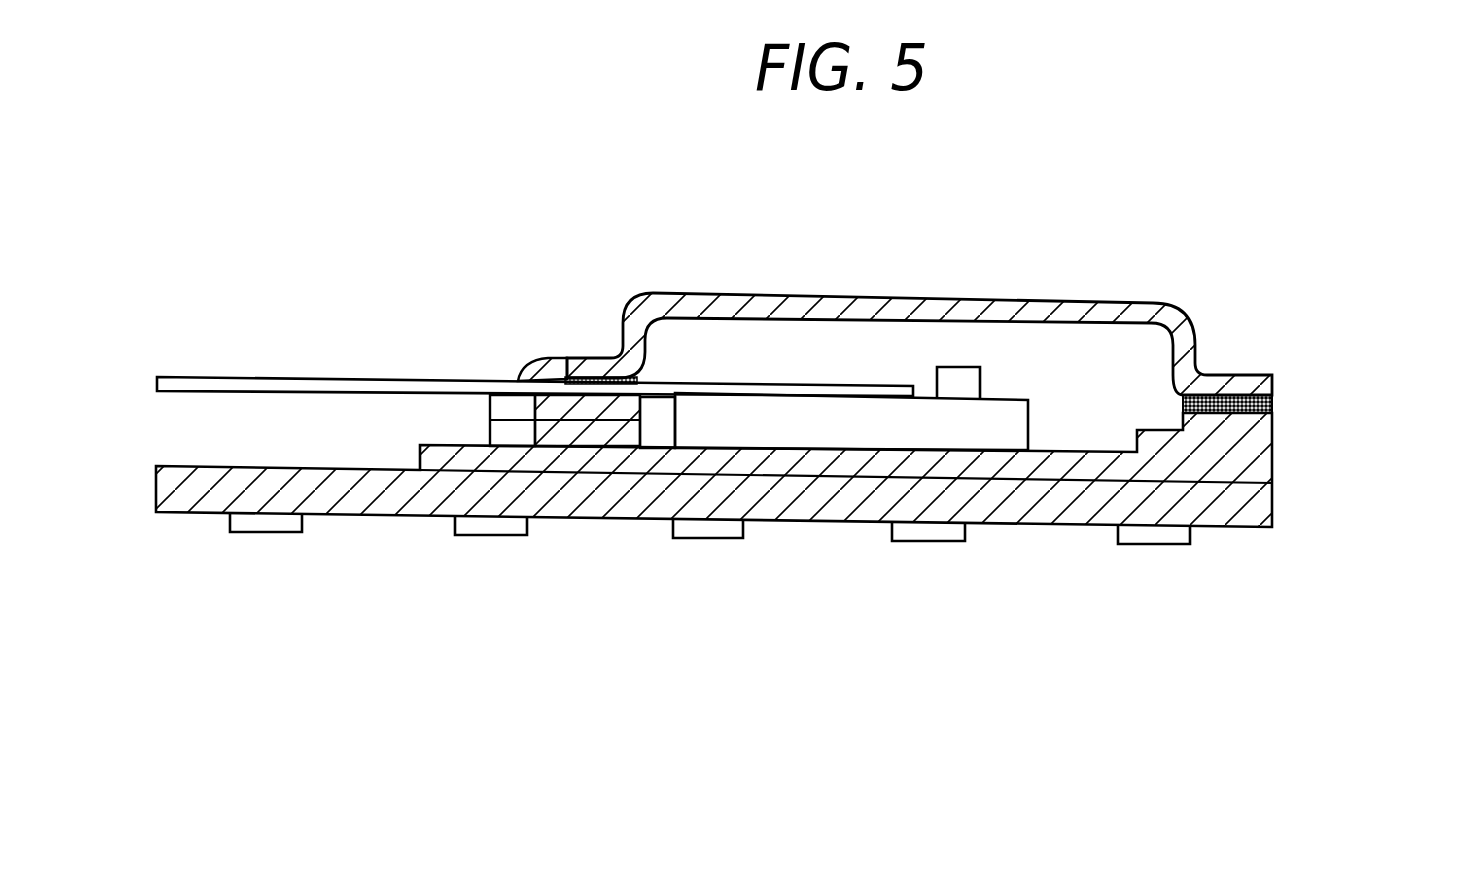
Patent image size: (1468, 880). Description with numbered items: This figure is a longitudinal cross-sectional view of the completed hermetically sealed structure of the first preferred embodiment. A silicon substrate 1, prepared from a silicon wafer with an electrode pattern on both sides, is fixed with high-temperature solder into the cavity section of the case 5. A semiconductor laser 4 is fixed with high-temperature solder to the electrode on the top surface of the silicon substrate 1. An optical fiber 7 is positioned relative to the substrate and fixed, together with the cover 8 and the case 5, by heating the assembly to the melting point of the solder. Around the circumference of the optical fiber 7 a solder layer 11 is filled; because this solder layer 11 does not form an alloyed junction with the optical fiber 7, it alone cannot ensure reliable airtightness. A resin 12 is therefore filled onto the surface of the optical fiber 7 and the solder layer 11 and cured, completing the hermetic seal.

The silicon substrate 1 is at (853, 432).
The semiconductor laser 4 is at (962, 370).
The case 5 is at (1075, 507).
The optical fiber 7 is at (303, 384).
The cover 8 is at (853, 297).
The solder layer 11 is at (594, 360).
The resin 12 is at (542, 362).